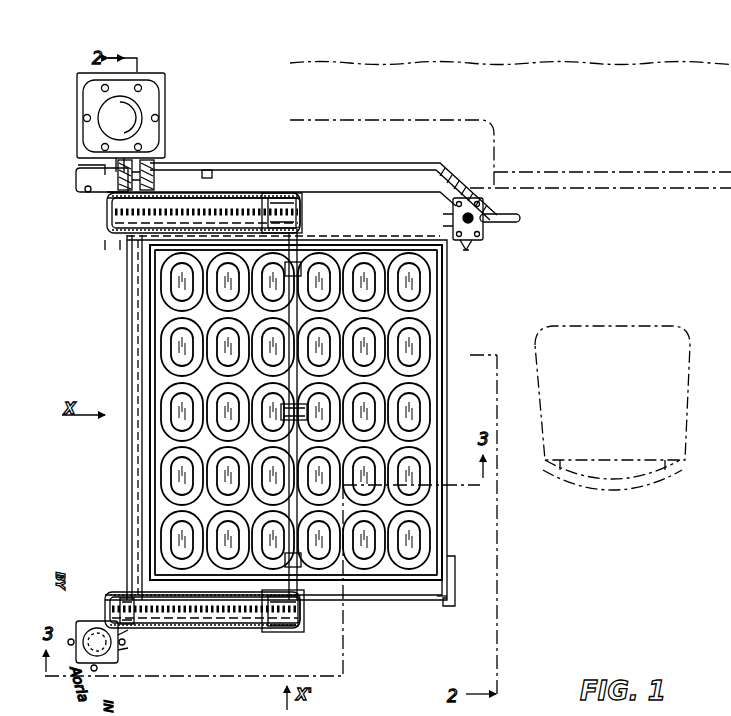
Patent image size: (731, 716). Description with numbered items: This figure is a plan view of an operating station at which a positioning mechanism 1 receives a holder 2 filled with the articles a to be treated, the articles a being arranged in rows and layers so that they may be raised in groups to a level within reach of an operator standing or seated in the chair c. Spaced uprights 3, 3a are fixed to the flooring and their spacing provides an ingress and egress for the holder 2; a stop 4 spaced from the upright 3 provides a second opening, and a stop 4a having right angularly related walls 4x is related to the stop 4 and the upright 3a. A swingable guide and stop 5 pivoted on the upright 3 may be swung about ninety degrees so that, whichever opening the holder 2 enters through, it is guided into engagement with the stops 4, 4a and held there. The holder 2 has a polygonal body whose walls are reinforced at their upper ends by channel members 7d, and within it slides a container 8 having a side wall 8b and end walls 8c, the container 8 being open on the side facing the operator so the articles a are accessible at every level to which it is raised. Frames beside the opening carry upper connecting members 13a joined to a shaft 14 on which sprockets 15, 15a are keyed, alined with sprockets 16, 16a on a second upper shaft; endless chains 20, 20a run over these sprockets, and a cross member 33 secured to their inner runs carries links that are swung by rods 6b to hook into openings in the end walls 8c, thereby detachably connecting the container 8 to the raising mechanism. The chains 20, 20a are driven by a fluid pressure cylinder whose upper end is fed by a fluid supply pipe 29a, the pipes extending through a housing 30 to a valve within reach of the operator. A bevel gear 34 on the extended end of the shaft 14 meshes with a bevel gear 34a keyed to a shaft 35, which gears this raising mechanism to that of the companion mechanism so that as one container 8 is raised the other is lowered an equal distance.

The positioning mechanism 1 is at (284, 429).
The holder 2 is at (469, 530).
The upright 3 is at (116, 655).
The upright 3a is at (92, 190).
The stop 4 is at (457, 583).
The stop 4a is at (455, 232).
The right angularly related walls 4x is at (458, 222).
The swingable guide and stop 5 is at (124, 592).
The rods 6b is at (298, 345).
The channel members 7d is at (450, 392).
The container 8 is at (160, 447).
The side wall 8b is at (153, 367).
The end walls 8c is at (450, 262).
The connecting member 13a is at (216, 623).
The shaft 14 is at (130, 329).
The sprocket 15 is at (137, 612).
The sprocket 15a is at (122, 219).
The sprocket 16 is at (290, 628).
The sprocket 16a is at (305, 225).
The endless chain 20 is at (183, 617).
The endless chain 20a is at (167, 213).
The fluid supply pipe 29a is at (375, 172).
The housing 30 is at (92, 170).
The cross member 33 is at (310, 404).
The bevel gear 34 is at (150, 155).
The bevel gear 34a is at (157, 173).
The shaft 35 is at (206, 172).
The articles a is at (412, 350).
The chair c is at (690, 452).